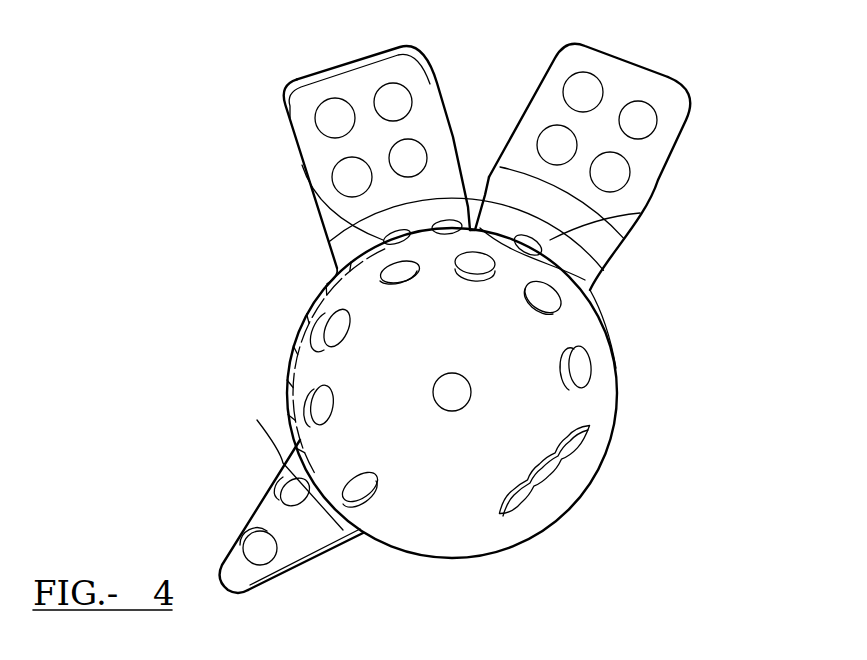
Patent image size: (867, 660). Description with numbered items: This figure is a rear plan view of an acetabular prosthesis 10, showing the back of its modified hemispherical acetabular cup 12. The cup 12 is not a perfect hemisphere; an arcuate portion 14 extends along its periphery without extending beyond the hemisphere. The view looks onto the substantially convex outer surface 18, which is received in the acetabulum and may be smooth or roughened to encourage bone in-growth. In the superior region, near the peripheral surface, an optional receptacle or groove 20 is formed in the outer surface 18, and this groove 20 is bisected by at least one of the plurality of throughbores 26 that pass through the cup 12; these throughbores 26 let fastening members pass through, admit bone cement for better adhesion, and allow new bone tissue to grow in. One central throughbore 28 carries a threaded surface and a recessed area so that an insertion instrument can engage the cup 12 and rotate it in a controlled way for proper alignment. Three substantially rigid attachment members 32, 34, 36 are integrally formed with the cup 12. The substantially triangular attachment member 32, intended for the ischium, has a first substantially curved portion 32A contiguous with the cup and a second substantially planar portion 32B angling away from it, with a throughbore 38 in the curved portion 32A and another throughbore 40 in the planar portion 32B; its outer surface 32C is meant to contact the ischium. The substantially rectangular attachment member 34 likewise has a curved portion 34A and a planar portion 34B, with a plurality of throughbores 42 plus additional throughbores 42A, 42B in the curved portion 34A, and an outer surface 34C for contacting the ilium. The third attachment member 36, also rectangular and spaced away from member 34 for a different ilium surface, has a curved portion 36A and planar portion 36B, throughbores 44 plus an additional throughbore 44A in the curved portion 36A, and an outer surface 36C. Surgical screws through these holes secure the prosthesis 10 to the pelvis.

The acetabular prosthesis 10 is at (705, 302).
The acetabular cup 12 is at (487, 560).
The arcuate portion 14 is at (617, 365).
The outer surface 18 is at (580, 403).
The groove 20 is at (298, 340).
The throughbores 26 is at (568, 382).
The throughbore 28 is at (452, 411).
The attachment member 32 is at (218, 562).
The first substantially curved portion 32A is at (287, 463).
The second substantially planar portion 32B is at (250, 520).
The outer surface 32C is at (307, 538).
The attachment member 34 is at (285, 77).
The first substantially curved portion 34A is at (322, 255).
The second substantially planar portion 34B is at (292, 148).
The outer surface 34C is at (435, 122).
The attachment member 36 is at (688, 86).
The first substantially curved portion 36A is at (578, 279).
The second substantially planar portion 36B is at (647, 172).
The outer surface 36C is at (542, 100).
The throughbore 38 is at (278, 490).
The throughbore 40 is at (262, 562).
The throughbores 42 is at (397, 143).
The throughbore 42A is at (447, 220).
The throughbore 42B is at (326, 199).
The throughbores 44 is at (607, 153).
The throughbore 44A is at (640, 213).